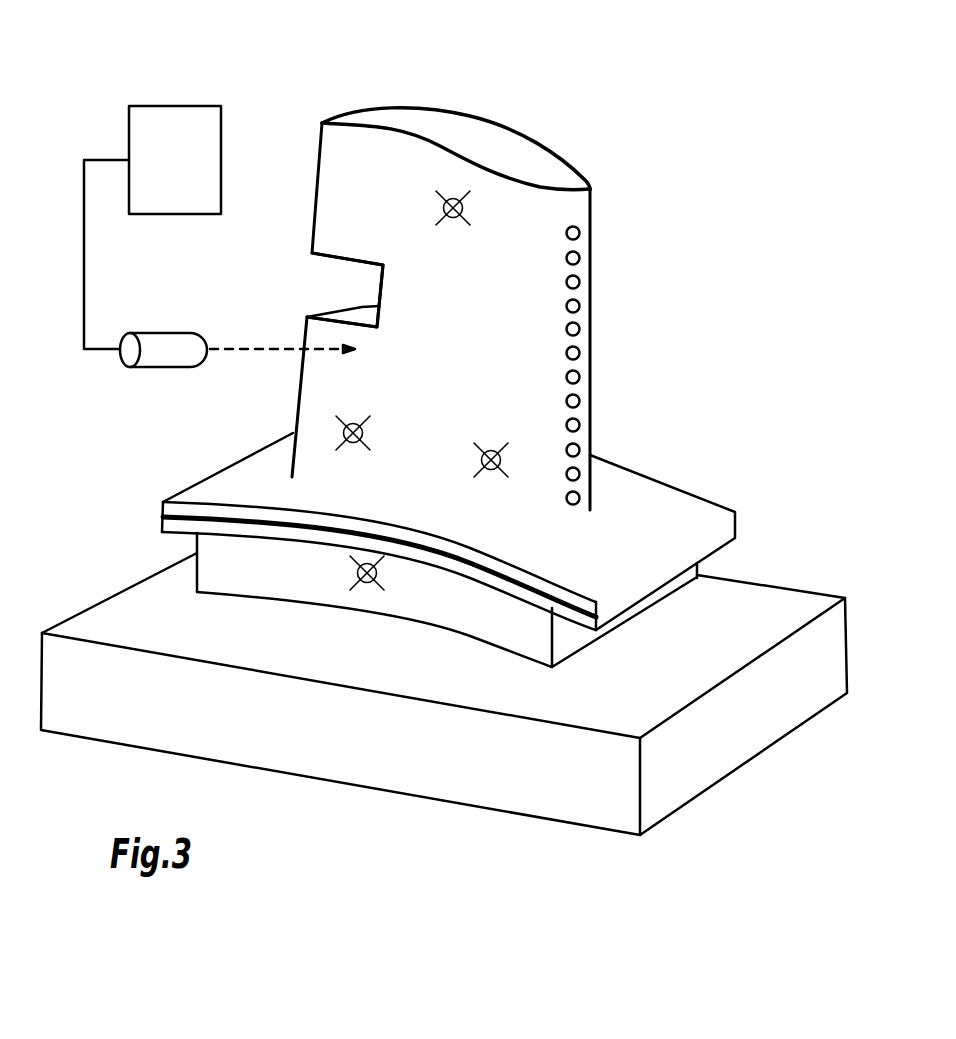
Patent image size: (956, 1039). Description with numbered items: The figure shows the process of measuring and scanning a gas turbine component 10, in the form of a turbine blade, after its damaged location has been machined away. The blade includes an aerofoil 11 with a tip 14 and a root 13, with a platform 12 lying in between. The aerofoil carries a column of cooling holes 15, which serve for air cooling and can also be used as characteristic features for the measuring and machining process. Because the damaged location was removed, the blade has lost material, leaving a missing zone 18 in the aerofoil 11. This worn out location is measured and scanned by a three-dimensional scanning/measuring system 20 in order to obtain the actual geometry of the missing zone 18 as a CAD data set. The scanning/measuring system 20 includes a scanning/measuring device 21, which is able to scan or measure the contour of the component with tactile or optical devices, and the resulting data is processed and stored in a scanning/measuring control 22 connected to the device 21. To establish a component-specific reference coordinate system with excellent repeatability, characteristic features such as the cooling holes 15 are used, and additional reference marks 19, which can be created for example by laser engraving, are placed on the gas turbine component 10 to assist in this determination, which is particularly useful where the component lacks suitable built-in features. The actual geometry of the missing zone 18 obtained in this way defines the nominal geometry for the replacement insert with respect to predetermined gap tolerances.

The gas turbine component 10 is at (303, 100).
The aerofoil 11 is at (317, 416).
The platform 12 is at (652, 493).
The root 13 is at (212, 567).
The tip 14 is at (537, 153).
The cooling holes 15 is at (578, 304).
The missing zone 18 is at (332, 285).
The reference marks 19 is at (457, 192).
The 3-D scanning/measuring system 20 is at (571, 795).
The scanning/measuring device 21 is at (158, 358).
The scanning/measuring control 22 is at (189, 177).